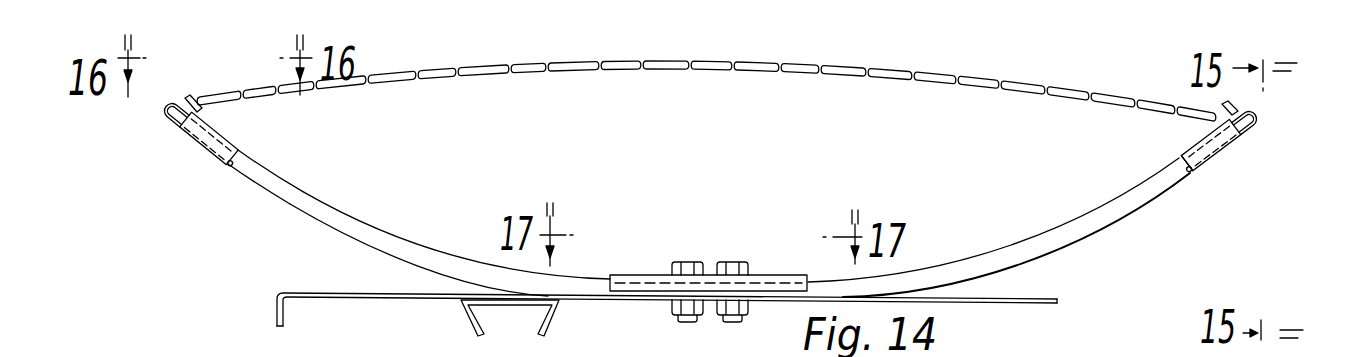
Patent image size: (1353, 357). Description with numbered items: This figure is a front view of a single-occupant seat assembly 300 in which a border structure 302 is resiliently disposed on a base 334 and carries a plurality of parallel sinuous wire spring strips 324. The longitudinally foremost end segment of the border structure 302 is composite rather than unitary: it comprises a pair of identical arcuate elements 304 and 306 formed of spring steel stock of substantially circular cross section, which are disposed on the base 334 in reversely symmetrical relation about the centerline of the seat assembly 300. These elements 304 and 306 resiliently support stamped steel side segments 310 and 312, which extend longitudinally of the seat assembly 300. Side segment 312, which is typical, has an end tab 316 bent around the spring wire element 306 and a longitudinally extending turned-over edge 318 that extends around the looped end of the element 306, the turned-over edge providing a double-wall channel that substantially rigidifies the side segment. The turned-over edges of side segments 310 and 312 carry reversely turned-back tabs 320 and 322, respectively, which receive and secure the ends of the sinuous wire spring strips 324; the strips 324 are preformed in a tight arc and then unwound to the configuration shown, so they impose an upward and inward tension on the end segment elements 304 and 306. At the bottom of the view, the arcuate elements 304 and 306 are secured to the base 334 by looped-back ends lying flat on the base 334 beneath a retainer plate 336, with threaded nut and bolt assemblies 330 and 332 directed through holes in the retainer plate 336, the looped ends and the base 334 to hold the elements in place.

The single-occupant seat assembly 300 is at (260, 209).
The border structure 302 is at (367, 221).
The arcuate element 304 is at (280, 183).
The arcuate element 306 is at (1046, 236).
The side segment 310 is at (197, 148).
The side segment 312 is at (1233, 153).
The end tab 316 is at (1196, 165).
The turned-over edge 318 is at (1259, 127).
The turned-back tab 320 is at (188, 97).
The turned-back tab 322 is at (1232, 108).
The sinuous wire spring strips 324 is at (711, 72).
The threaded nut and bolt assembly 330 is at (698, 278).
The threaded nut and bolt assembly 332 is at (731, 266).
The base 334 is at (338, 268).
The retainer plate 336 is at (633, 276).